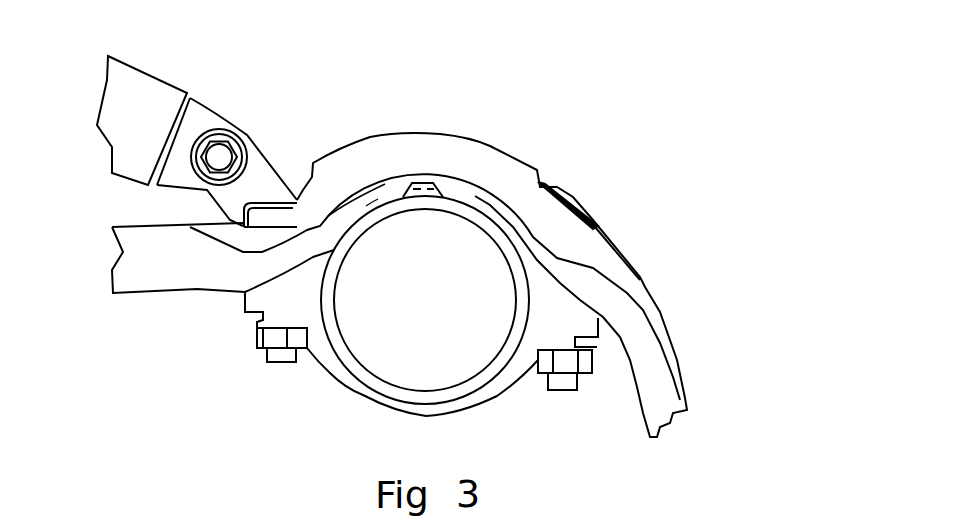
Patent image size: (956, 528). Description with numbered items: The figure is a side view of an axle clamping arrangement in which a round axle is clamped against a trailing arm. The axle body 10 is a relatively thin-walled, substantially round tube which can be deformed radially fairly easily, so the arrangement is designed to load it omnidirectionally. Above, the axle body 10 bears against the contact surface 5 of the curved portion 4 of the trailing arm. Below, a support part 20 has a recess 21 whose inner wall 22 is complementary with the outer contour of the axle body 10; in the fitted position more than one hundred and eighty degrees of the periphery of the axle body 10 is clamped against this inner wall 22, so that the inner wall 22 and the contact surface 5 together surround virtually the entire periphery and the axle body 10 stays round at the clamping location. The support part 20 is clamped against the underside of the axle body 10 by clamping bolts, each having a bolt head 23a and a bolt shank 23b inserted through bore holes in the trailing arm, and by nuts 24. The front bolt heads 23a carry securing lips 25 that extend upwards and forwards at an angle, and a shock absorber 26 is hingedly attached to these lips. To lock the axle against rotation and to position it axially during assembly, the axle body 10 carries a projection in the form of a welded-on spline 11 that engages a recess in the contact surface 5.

The curved portion 4 is at (437, 132).
The contact surface 5 is at (381, 213).
The axle body 10 is at (457, 384).
The welded-on spline 11 is at (440, 193).
The support part 20 is at (507, 367).
The recess 21 is at (478, 313).
The inner wall 22 is at (377, 374).
The bolt head 23a is at (264, 218).
The bolt shank 23b is at (288, 363).
The nut 24 is at (257, 339).
The securing lip 25 is at (250, 162).
The shock absorber 26 is at (130, 80).